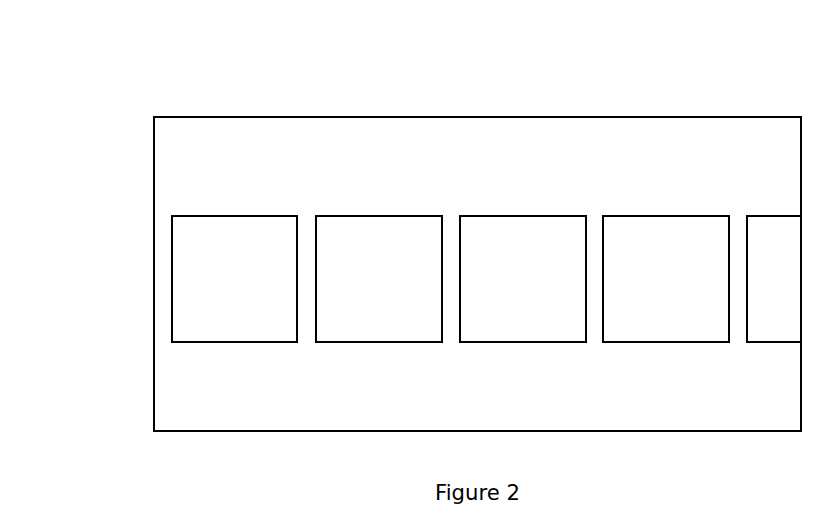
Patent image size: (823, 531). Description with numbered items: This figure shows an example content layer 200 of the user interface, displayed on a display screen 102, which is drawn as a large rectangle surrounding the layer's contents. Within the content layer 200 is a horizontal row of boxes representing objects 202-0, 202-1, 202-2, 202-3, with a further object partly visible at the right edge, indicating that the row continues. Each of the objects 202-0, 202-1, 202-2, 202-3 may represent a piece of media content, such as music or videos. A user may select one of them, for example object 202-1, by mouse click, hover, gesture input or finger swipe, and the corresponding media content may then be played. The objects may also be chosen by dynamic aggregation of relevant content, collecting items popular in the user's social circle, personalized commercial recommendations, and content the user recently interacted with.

The content layer 200 is at (148, 42).
The display screen 102 is at (208, 420).
The object 202-0 is at (265, 288).
The object 202-1 is at (410, 288).
The object 202-2 is at (554, 288).
The object 202-3 is at (696, 288).